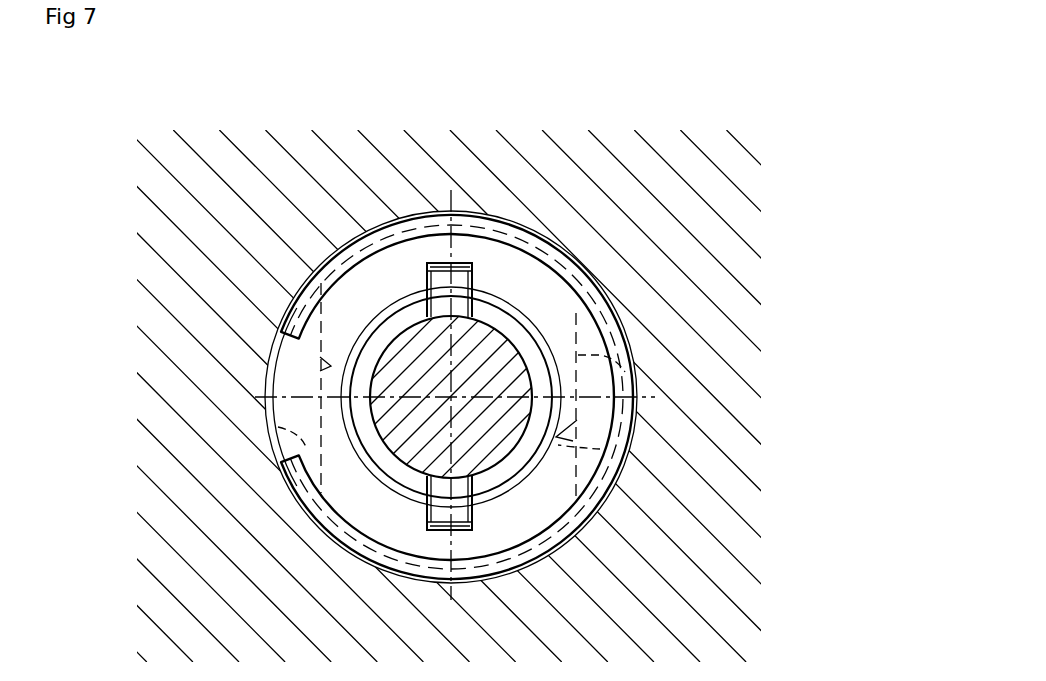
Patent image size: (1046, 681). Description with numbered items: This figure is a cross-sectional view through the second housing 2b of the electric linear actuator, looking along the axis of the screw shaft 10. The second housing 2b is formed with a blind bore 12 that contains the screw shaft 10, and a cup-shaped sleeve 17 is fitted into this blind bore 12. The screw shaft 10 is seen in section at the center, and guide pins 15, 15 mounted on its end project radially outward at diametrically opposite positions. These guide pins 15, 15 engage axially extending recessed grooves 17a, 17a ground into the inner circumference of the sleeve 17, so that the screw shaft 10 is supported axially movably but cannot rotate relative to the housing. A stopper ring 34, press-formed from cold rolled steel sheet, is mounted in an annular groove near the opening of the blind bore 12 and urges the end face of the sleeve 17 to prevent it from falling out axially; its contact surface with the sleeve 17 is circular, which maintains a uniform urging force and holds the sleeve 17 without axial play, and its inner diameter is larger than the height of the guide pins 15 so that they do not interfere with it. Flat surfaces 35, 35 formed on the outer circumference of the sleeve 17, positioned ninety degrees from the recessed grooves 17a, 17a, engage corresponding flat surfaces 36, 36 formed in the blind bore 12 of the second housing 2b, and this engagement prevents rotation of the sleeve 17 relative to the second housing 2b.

The second housing 2b is at (521, 152).
The blind bore 12 is at (413, 176).
The stopper ring 34 is at (312, 279).
The sleeve 17 is at (567, 308).
The screw shaft 10 is at (420, 349).
The guide pin 15 is at (440, 300).
The recessed groove 17a is at (458, 277).
The flat surface 35 is at (280, 430).
The flat surface 36 is at (318, 367).